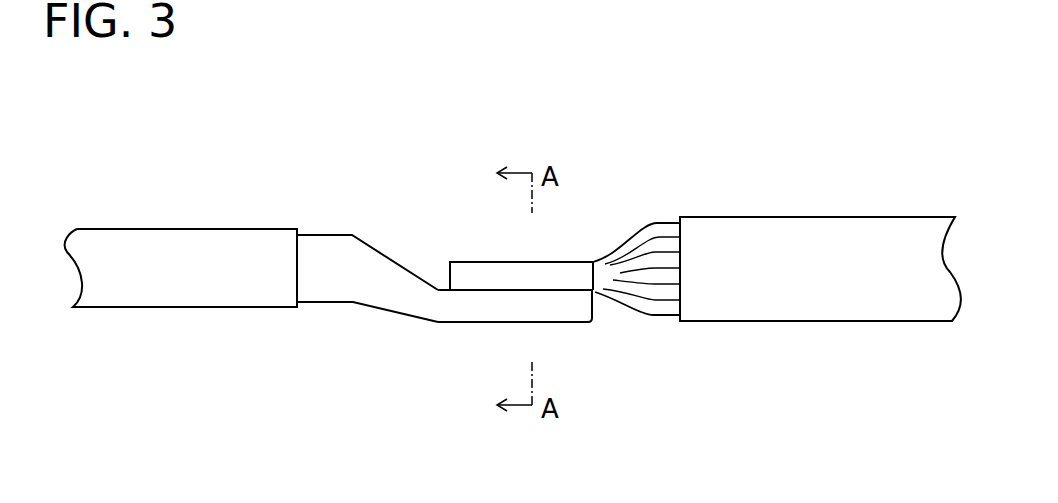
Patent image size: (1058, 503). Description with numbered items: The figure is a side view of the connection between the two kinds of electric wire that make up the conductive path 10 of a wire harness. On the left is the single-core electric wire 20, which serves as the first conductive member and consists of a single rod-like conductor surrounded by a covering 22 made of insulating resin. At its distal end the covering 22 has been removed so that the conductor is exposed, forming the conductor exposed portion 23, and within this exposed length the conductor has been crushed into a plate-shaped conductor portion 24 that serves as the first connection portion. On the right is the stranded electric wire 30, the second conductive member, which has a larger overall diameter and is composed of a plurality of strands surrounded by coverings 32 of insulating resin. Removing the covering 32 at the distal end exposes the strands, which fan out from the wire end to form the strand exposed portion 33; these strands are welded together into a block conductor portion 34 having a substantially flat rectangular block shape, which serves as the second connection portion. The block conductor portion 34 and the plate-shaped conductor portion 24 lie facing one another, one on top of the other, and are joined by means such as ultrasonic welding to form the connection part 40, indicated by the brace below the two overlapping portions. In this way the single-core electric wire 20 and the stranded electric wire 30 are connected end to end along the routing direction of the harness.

The conductive path 10 is at (533, 113).
The single-core electric wire 20 is at (220, 228).
The covering 22 is at (133, 240).
The conductor exposed portion 23 is at (328, 247).
The plate-shaped conductor portion 24 is at (428, 310).
The stranded electric wire 30 is at (820, 215).
The covering 32 is at (893, 227).
The strand exposed portion 33 is at (660, 228).
The block conductor portion 34 is at (480, 280).
The connection part 40 is at (380, 394).